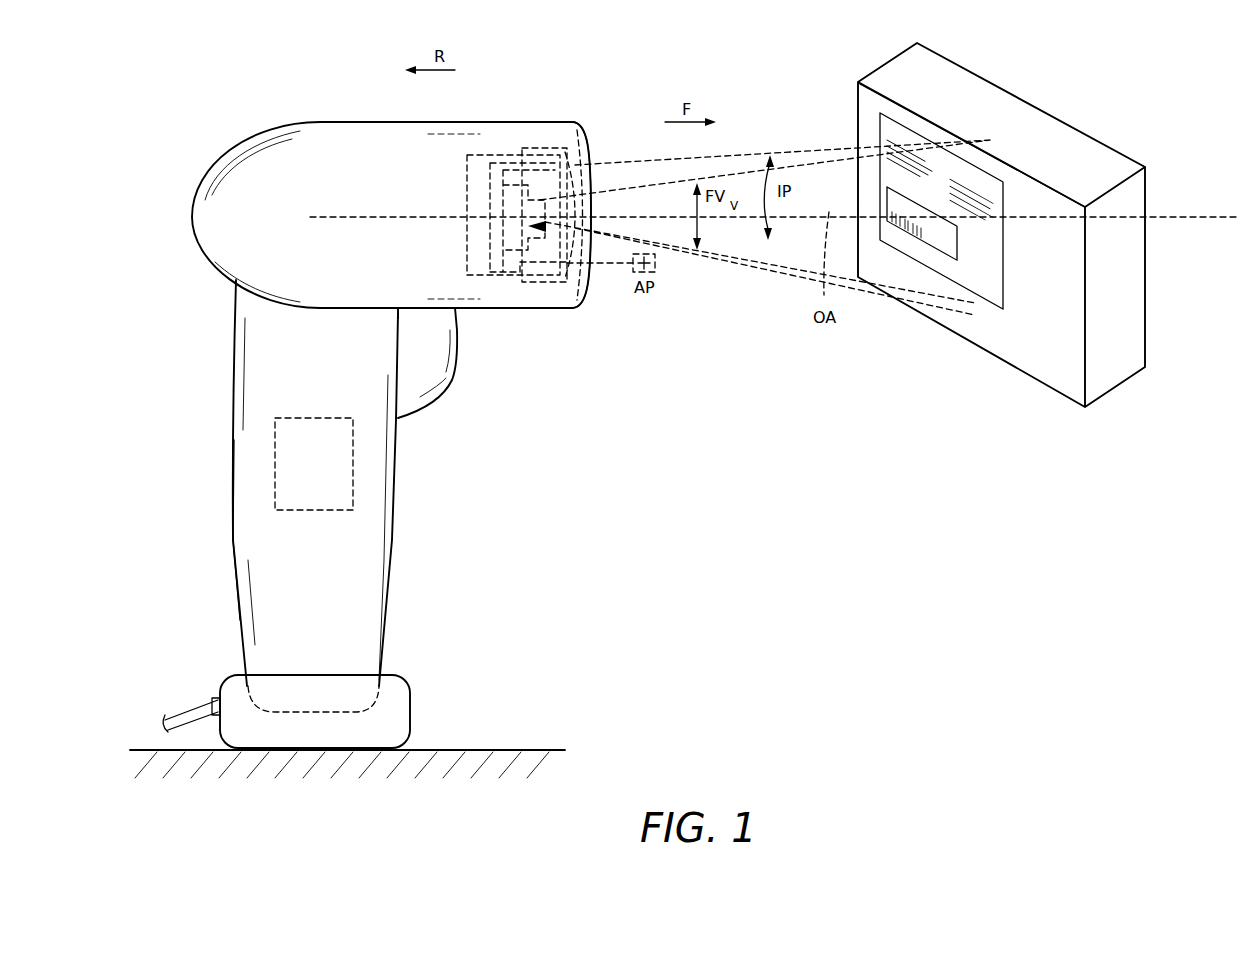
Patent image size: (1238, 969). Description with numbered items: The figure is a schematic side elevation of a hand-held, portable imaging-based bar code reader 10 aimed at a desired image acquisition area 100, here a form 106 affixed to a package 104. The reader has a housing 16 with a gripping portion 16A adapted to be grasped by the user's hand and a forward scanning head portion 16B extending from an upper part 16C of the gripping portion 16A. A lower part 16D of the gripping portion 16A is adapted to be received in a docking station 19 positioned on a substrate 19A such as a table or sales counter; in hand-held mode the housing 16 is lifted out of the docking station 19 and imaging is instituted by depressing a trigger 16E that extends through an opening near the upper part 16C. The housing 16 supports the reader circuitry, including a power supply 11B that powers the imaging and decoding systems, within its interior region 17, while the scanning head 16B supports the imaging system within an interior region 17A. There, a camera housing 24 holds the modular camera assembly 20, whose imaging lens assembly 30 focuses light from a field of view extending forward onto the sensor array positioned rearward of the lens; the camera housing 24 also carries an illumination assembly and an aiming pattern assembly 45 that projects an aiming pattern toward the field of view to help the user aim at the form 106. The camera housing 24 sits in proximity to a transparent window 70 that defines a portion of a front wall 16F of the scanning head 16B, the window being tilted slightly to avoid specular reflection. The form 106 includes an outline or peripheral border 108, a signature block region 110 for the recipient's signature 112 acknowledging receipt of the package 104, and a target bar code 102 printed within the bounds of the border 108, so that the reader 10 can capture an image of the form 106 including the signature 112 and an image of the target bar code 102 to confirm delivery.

The imaging-based bar code reader 10 is at (200, 105).
The power supply 11B is at (313, 511).
The housing 16 is at (374, 403).
The gripping portion 16A is at (237, 552).
The scanning head portion 16B is at (368, 122).
The upper part of gripping portion 16C is at (330, 318).
The lower part of gripping portion 16D is at (215, 692).
The trigger 16E is at (448, 378).
The front wall 16F is at (574, 122).
The interior region 17 is at (265, 372).
The interior region of scanning head 17A is at (320, 142).
The docking station 19 is at (410, 712).
The substrate 19A is at (508, 750).
The camera assembly 20 is at (452, 161).
The camera housing 24 is at (467, 245).
The imaging lens assembly 30 is at (586, 276).
The aiming pattern assembly 45 is at (504, 290).
The transparent window 70 is at (597, 185).
The desired image acquisition area 100 is at (949, 254).
The target bar code 102 is at (904, 287).
The package 104 is at (1001, 232).
The form 106 is at (928, 117).
The peripheral border 108 is at (975, 178).
The signature block region 110 is at (968, 227).
The recipient's signature 112 is at (896, 220).